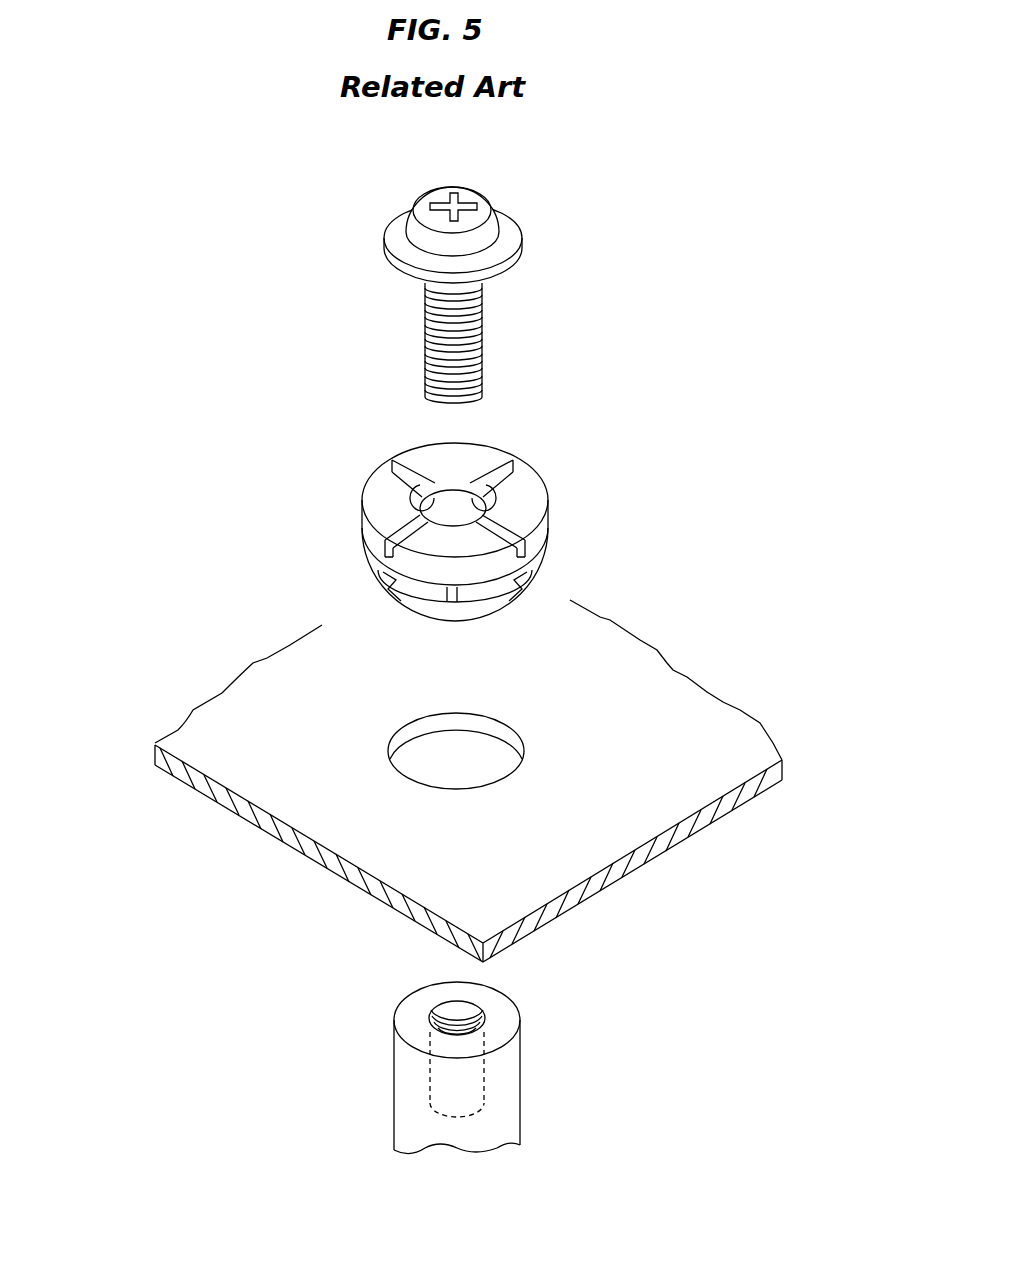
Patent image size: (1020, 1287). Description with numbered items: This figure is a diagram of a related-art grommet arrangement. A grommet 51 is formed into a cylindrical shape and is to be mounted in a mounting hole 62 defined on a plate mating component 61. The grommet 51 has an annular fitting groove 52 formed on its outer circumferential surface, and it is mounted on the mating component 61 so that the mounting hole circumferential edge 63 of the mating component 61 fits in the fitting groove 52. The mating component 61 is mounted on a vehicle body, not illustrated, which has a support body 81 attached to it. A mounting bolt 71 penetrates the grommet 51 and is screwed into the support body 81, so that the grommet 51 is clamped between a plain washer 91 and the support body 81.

The plain washer 91 is at (508, 228).
The mounting bolt 71 is at (460, 317).
The grommet 51 is at (553, 493).
The annular fitting groove 52 is at (377, 573).
The mating component 61 is at (632, 703).
The mounting hole 62 is at (455, 747).
The mounting hole circumferential edge 63 is at (380, 757).
The support body 81 is at (500, 1108).